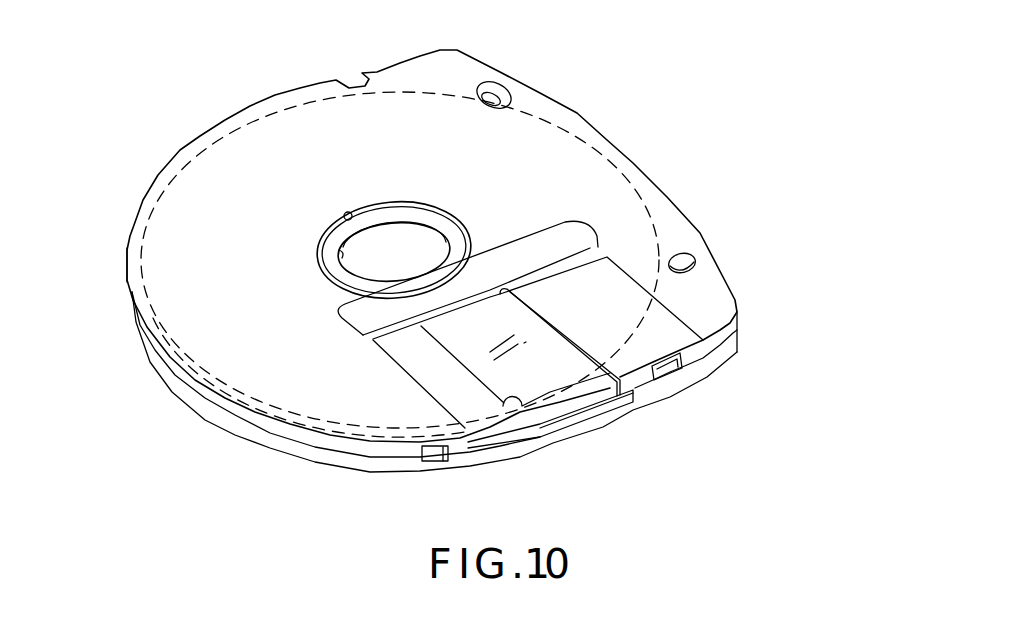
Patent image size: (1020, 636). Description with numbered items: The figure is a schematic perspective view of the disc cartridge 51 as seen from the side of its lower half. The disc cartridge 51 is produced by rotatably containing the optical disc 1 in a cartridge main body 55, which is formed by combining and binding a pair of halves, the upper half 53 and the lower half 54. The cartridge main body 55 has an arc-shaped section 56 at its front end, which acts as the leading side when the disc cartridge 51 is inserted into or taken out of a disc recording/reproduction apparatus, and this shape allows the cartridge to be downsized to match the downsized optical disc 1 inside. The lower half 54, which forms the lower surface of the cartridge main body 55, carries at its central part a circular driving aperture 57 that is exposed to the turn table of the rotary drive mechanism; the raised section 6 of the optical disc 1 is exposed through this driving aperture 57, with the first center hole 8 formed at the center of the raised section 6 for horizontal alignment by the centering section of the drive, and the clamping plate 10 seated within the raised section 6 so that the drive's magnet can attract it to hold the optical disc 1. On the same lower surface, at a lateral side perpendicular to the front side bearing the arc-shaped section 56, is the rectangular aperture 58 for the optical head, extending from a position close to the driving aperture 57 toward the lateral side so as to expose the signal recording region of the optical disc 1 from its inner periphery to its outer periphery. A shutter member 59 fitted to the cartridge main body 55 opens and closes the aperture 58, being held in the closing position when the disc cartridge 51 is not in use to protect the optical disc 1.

The optical disc 1 is at (215, 178).
The raised section 6 is at (432, 218).
The first center hole 8 is at (343, 258).
The clamping plate 10 is at (397, 237).
The disc cartridge 51 is at (574, 110).
The upper half 53 is at (727, 353).
The lower half 54 is at (733, 326).
The cartridge main body 55 is at (800, 314).
The arc-shaped section 56 is at (128, 247).
The driving aperture 57 is at (347, 212).
The aperture for the optical head 58 is at (514, 406).
The shutter member 59 is at (681, 342).